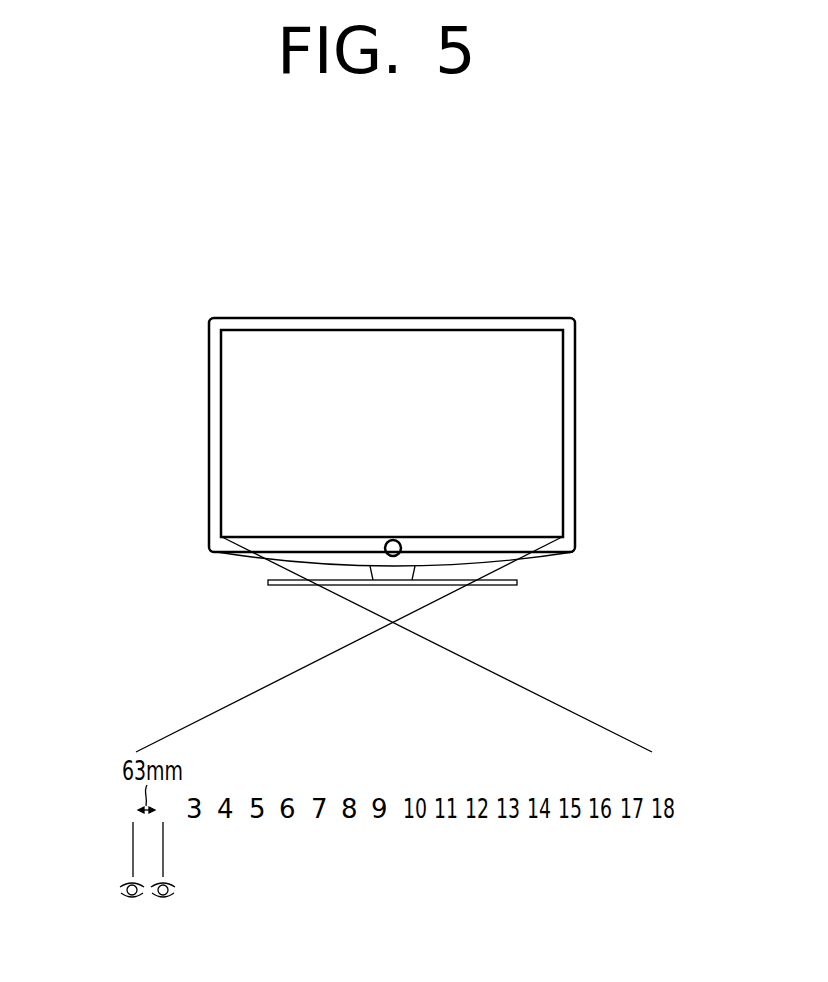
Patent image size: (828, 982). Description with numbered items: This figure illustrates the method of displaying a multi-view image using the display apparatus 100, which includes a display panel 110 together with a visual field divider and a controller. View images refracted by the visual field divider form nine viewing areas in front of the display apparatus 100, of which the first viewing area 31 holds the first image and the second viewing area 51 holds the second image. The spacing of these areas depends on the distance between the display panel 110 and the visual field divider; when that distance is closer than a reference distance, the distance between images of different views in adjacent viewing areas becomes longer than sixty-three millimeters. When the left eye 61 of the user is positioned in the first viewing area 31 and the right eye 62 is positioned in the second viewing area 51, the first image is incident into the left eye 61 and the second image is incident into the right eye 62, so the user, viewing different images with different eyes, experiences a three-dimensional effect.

The display apparatus 100 is at (397, 317).
The display panel 110 is at (468, 328).
The first viewing area 31 is at (125, 810).
The second viewing area 51 is at (168, 822).
The left eye 61 is at (127, 897).
The right eye 62 is at (168, 897).